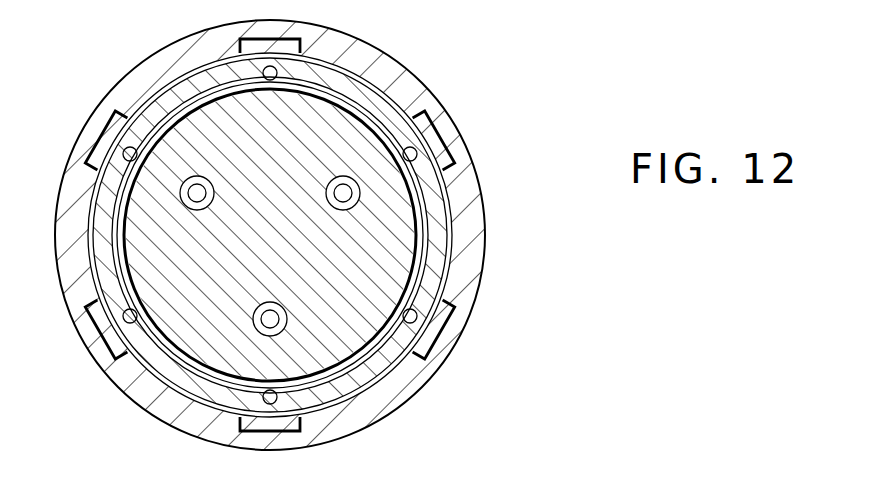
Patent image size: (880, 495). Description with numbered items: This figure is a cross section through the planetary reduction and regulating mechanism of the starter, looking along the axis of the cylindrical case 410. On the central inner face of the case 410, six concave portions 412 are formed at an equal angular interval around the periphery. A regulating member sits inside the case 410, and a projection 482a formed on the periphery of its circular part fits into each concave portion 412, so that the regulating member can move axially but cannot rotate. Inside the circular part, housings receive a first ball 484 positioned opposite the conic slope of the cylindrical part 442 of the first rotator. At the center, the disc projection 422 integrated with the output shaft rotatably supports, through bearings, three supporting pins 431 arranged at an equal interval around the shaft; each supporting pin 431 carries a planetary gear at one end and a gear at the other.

The cylindrical case 410 is at (393, 70).
The concave portion 412 is at (320, 26).
The projection 482a is at (440, 122).
The supporting pin 431 is at (345, 192).
The disc projection 422 is at (362, 207).
The cylindrical part 442 is at (412, 313).
The first ball 484 is at (437, 340).